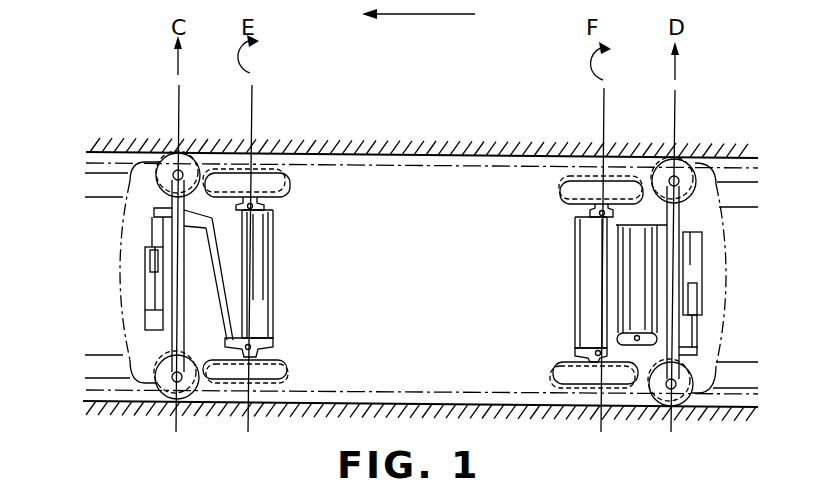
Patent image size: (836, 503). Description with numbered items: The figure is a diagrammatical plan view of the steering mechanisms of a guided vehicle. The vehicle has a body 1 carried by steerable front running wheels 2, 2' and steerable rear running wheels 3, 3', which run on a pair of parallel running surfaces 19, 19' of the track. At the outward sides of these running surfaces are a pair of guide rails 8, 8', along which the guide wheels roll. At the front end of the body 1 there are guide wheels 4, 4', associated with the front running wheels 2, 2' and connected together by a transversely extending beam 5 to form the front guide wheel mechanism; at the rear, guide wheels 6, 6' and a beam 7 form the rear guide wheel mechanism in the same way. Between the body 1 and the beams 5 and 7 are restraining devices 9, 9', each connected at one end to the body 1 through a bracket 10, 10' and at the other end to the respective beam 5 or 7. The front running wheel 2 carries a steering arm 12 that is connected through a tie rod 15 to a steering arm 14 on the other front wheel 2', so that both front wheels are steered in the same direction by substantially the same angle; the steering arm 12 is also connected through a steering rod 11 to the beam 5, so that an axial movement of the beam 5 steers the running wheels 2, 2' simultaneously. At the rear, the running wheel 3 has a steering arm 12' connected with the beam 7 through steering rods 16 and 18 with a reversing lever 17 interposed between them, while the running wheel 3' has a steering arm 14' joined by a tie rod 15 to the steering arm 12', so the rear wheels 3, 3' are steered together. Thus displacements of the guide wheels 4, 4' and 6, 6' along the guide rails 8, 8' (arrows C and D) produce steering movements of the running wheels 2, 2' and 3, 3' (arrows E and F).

The body 1 is at (397, 163).
The front running wheel 2 is at (263, 369).
The front running wheel 2' is at (267, 183).
The rear running wheel 3 is at (583, 188).
The rear running wheel 3' is at (575, 375).
The guide wheel 4 is at (167, 398).
The guide wheel 4' is at (170, 153).
The beam 5 is at (152, 216).
The guide wheel 6 is at (678, 159).
The guide wheel 6' is at (657, 407).
The beam 7 is at (680, 218).
The guide rail 8 is at (735, 408).
The guide rail 8' is at (747, 163).
The restraining device 9 is at (127, 263).
The restraining device 9' is at (722, 331).
The bracket 10 is at (124, 291).
The bracket 10' is at (725, 273).
The steering rod 11 is at (220, 297).
The steering arm 12 is at (270, 333).
The steering arm 12' is at (572, 218).
The steering arm 14 is at (279, 214).
The steering arm 14' is at (571, 342).
The tie rod 15 is at (277, 256).
The steering rod 16 is at (657, 288).
The reversing lever 17 is at (632, 332).
The steering rod 18 is at (620, 258).
The running surface 19 is at (88, 378).
The running surface 19' is at (87, 169).